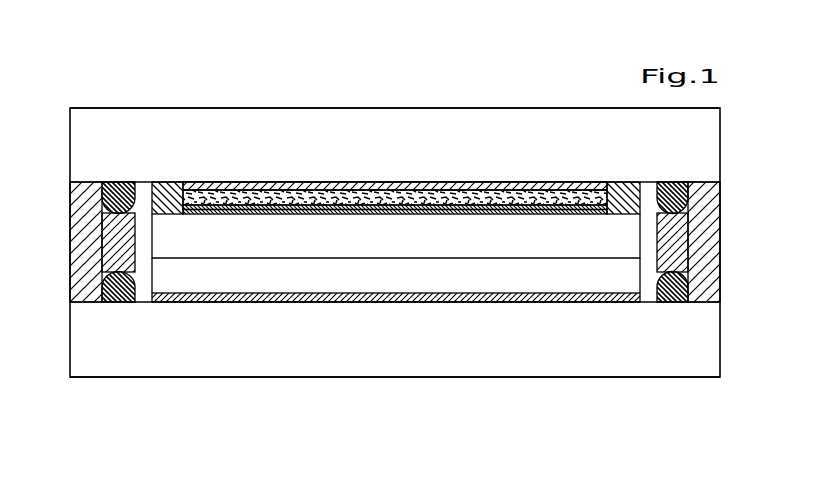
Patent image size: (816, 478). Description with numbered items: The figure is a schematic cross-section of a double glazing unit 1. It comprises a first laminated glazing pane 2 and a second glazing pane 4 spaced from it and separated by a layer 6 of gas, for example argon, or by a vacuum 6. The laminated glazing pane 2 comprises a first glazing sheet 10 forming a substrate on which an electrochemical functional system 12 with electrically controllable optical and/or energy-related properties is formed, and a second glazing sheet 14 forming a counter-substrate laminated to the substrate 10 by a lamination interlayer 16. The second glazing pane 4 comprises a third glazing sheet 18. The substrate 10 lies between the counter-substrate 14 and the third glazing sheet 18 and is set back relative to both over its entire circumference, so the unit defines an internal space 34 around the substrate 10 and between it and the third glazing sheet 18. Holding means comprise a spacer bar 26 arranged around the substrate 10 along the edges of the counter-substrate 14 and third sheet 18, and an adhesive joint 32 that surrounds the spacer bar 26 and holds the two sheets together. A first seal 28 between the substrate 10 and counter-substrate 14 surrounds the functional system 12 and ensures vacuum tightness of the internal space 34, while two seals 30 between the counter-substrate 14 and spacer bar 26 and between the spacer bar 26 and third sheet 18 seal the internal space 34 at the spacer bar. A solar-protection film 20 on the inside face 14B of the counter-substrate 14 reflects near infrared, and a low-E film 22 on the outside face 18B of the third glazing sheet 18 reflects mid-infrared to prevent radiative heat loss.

The glazing unit 1 is at (268, 92).
The first laminated glazing pane 2 is at (178, 107).
The second glazing pane 4 is at (268, 384).
The layer of gas 6 is at (187, 283).
The first glazing sheet 10 is at (510, 243).
The electrochemical system 12 is at (420, 216).
The second glazing sheet 14 is at (410, 130).
The inside face of the counter-substrate 14B is at (322, 182).
The lamination interlayer 16 is at (540, 191).
The third glazing sheet 18 is at (338, 360).
The outside face of the third glazing sheet 18B is at (262, 293).
The solar-protection film 20 is at (483, 182).
The low-E film 22 is at (448, 303).
The spacer bar 26 is at (100, 222).
The first seal 28 is at (168, 182).
The seals 30 is at (120, 182).
The adhesive joint 32 is at (78, 254).
The internal space 34 is at (643, 284).